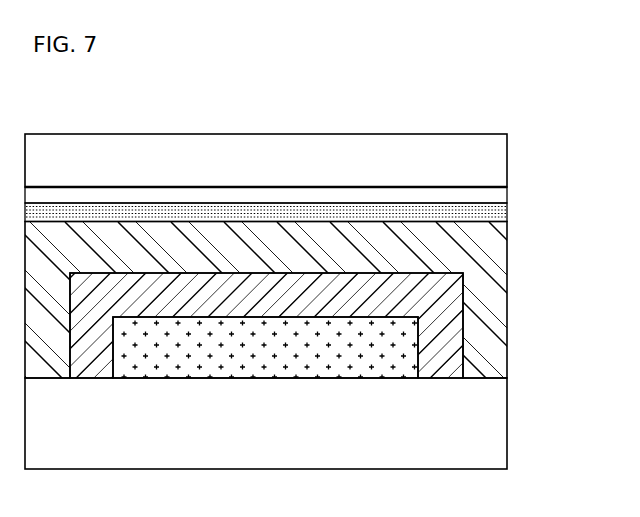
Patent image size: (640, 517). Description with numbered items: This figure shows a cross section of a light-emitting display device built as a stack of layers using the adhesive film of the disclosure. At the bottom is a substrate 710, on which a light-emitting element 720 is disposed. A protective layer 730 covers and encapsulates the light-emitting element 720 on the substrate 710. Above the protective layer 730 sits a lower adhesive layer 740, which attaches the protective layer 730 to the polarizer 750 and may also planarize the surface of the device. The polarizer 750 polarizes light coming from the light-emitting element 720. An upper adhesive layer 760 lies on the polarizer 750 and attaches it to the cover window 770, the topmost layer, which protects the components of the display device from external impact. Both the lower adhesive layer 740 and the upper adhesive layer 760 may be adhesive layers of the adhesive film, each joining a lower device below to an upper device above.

The substrate 710 is at (492, 423).
The light-emitting element 720 is at (407, 353).
The protective layer 730 is at (443, 317).
The lower adhesive layer 740 is at (507, 277).
The polarizer 750 is at (500, 215).
The upper adhesive layer 760 is at (500, 193).
The cover window 770 is at (500, 157).